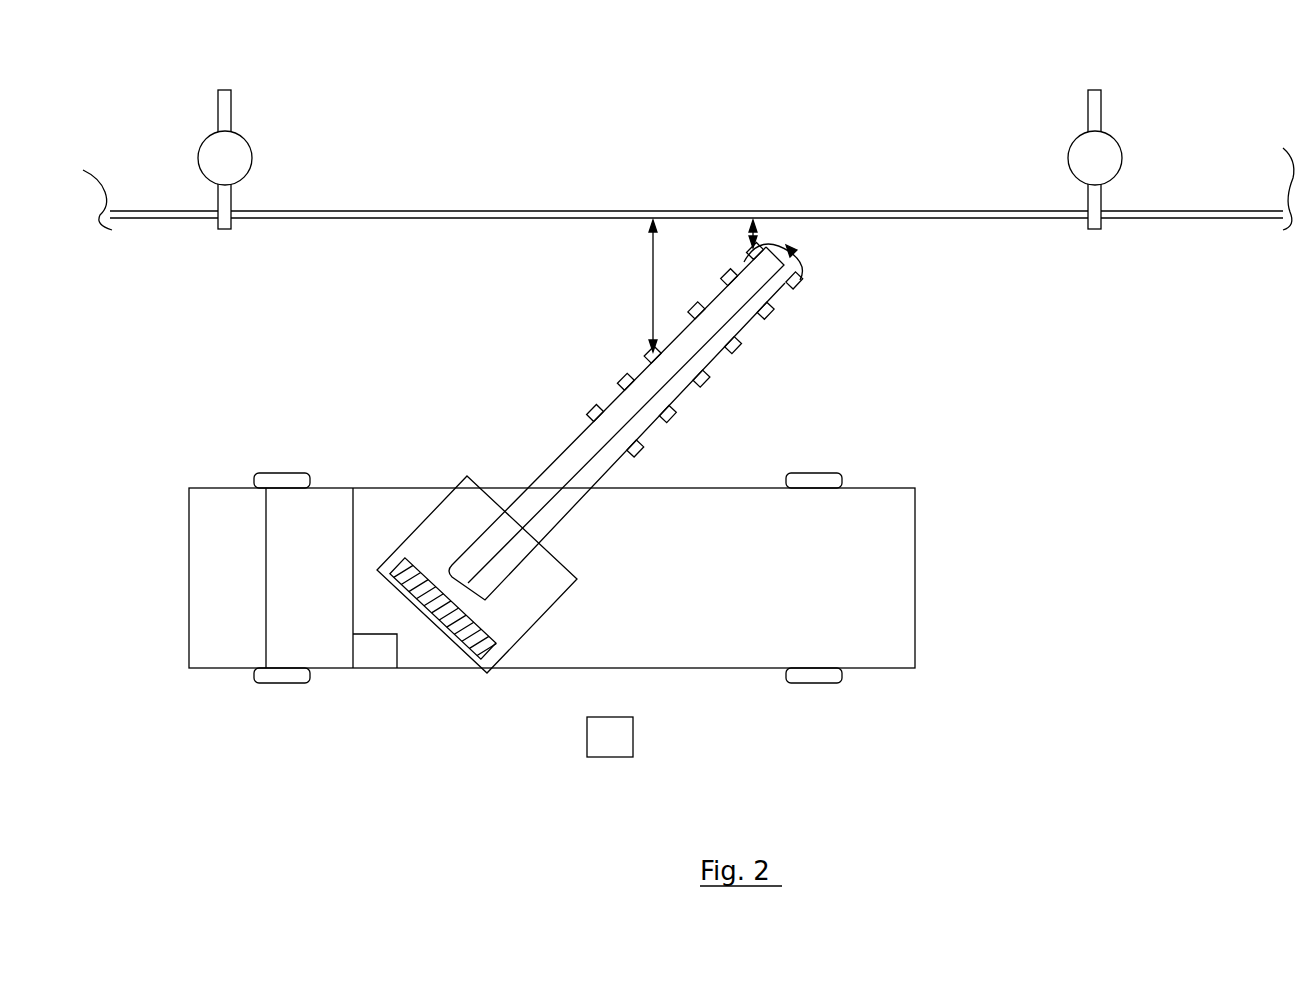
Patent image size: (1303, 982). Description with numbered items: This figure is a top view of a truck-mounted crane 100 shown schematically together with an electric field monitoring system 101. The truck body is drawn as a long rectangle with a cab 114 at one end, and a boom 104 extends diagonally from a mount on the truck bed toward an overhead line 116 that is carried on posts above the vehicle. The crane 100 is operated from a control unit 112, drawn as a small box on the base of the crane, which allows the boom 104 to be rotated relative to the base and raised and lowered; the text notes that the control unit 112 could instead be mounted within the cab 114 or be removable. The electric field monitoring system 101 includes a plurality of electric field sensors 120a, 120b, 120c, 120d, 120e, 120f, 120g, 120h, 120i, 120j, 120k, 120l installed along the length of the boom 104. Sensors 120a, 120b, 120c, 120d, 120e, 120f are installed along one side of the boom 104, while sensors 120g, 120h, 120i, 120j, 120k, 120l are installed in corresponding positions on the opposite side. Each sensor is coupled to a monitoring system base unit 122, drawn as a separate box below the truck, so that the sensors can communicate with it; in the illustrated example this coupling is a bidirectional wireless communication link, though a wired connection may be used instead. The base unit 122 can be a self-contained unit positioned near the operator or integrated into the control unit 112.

The truck-mounted crane 100 is at (220, 462).
The electric field monitoring system 101 is at (900, 356).
The boom 104 is at (521, 455).
The control unit 112 is at (377, 654).
The cab 114 is at (324, 508).
The rail 116 is at (882, 215).
The electric field sensor 120a is at (800, 283).
The electric field sensor 120b is at (771, 314).
The electric field sensor 120c is at (738, 348).
The electric field sensor 120d is at (707, 381).
The electric field sensor 120e is at (673, 416).
The electric field sensor 120f is at (641, 452).
The electric field sensor 120g is at (750, 248).
The electric field sensor 120h is at (726, 276).
The electric field sensor 120i is at (692, 312).
The electric field sensor 120j is at (648, 352).
The electric field sensor 120k is at (621, 380).
The electric field sensor 120l is at (591, 412).
The monitoring system base unit 122 is at (610, 735).